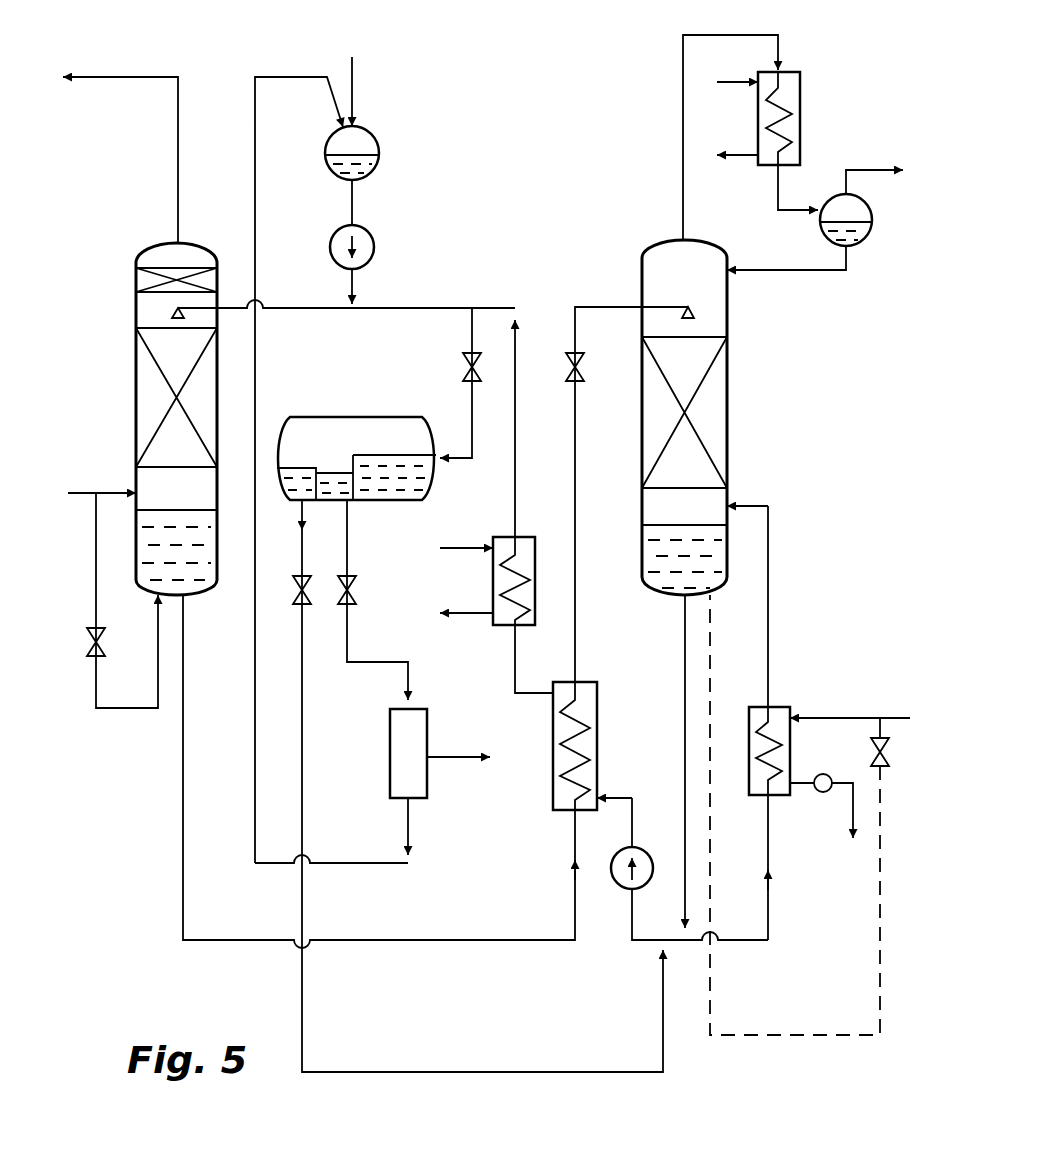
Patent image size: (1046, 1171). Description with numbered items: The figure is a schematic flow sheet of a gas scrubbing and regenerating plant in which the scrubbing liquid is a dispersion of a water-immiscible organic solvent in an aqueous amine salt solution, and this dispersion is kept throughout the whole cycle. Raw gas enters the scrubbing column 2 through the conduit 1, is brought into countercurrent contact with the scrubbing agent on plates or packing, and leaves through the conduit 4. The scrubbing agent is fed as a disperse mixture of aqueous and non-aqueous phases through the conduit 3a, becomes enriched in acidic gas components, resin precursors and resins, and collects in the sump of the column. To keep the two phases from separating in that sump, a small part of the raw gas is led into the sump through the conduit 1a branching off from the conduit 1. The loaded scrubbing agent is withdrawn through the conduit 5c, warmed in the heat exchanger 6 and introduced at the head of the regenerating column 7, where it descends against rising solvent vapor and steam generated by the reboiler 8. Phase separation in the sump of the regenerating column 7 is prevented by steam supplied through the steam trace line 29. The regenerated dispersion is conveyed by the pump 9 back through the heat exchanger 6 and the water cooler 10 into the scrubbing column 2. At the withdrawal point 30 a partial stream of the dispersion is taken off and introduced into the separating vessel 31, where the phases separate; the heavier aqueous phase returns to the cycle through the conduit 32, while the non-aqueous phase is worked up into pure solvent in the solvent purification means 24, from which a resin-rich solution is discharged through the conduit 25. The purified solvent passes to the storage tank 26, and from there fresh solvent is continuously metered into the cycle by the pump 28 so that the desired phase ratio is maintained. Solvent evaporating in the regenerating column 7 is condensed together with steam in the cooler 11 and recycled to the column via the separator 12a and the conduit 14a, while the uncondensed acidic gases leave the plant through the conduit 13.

The conduit 1 is at (85, 492).
The conduit 1a is at (120, 710).
The scrubbing column 2 is at (136, 378).
The conduit 3a is at (310, 316).
The conduit 4 is at (133, 75).
The conduit 5c is at (185, 902).
The heat exchanger 6 is at (597, 727).
The regenerating column 7 is at (727, 407).
The reboiler 8 is at (797, 744).
The pump 9 is at (648, 852).
The water cooler 10 is at (493, 580).
The cooler 11 is at (802, 98).
The separator 12a is at (862, 246).
The conduit 13 is at (862, 170).
The conduit 14a is at (783, 270).
The solvent purification means 24 is at (390, 748).
The conduit 25 is at (461, 762).
The storage tank 26 is at (377, 142).
The pump 28 is at (374, 248).
The steam trace line 29 is at (878, 930).
The withdrawal point 30 is at (473, 305).
The separating vessel 31 is at (390, 417).
The conduit 32 is at (470, 1072).